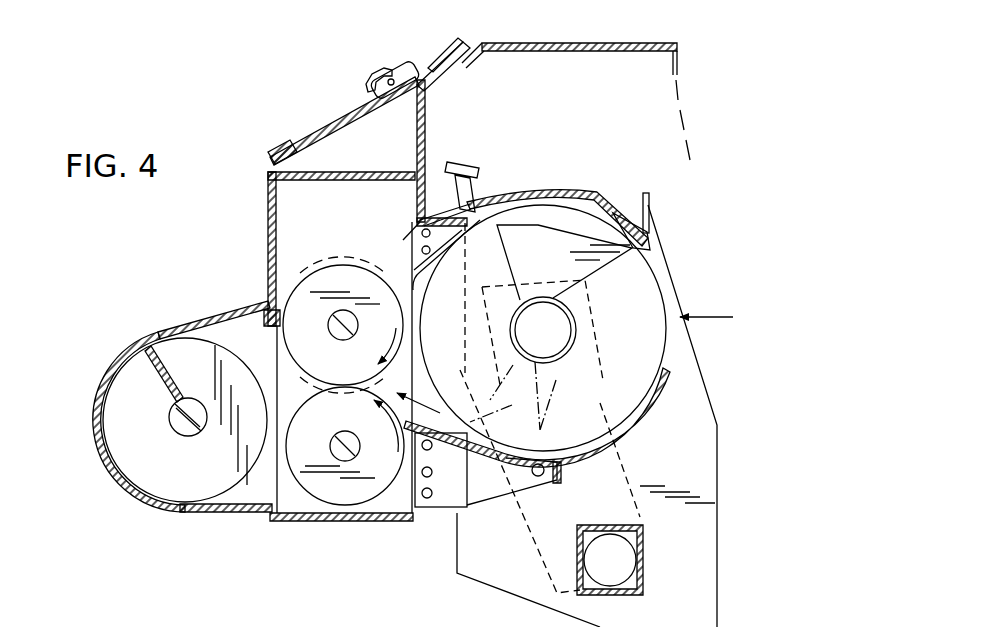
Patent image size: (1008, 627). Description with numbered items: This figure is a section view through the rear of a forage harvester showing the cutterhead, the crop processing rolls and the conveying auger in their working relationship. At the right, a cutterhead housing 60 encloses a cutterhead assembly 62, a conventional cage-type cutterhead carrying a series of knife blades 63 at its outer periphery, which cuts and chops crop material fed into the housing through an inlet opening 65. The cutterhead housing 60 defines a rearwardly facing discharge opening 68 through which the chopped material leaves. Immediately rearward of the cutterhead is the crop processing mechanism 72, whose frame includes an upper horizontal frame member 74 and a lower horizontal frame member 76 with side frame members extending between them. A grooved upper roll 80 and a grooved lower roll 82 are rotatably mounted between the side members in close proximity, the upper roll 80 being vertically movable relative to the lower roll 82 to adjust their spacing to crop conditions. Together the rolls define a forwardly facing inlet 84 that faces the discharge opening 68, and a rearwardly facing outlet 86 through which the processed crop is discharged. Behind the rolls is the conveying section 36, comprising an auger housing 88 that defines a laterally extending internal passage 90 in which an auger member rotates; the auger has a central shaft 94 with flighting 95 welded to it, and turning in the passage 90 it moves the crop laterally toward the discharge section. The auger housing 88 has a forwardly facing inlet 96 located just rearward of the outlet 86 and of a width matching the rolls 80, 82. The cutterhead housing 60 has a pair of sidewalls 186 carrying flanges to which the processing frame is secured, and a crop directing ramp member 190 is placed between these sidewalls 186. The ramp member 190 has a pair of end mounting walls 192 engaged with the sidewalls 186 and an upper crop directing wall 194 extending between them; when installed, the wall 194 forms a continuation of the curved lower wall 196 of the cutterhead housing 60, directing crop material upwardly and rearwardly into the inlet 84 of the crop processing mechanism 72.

The conveying section 36 is at (90, 472).
The cutterhead housing 60 is at (553, 191).
The cutterhead assembly 62 is at (656, 271).
The knife blades 63 is at (568, 412).
The inlet opening 65 is at (670, 368).
The discharge opening 68 is at (437, 441).
The crop processing mechanism 72 is at (330, 537).
The upper horizontal frame member 74 is at (358, 164).
The lower horizontal frame member 76 is at (346, 518).
The upper roll 80 is at (268, 305).
The lower roll 82 is at (302, 488).
The inlet 84 is at (345, 386).
The outlet 86 is at (285, 372).
The auger housing 88 is at (104, 376).
The internal passage 90 is at (232, 509).
The central shaft 94 is at (177, 433).
The flighting 95 is at (216, 326).
The inlet 96 is at (273, 458).
The sidewalls 186 is at (418, 240).
The crop directing ramp member 190 is at (477, 516).
The end mounting walls 192 is at (500, 497).
The upper crop directing wall 194 is at (463, 440).
The curved lower wall 196 is at (607, 447).